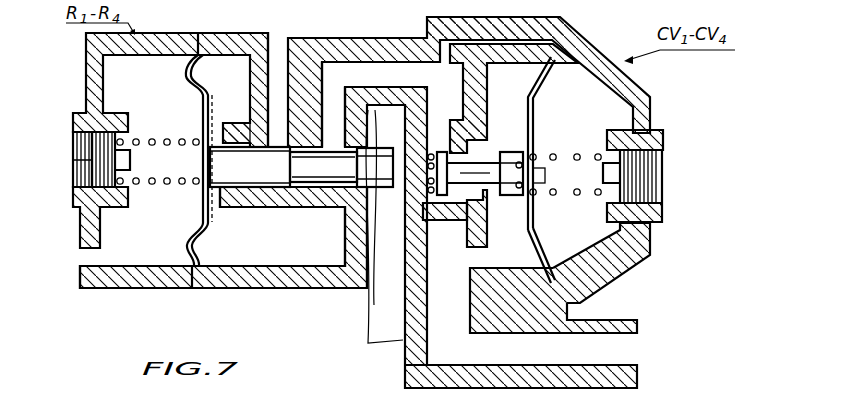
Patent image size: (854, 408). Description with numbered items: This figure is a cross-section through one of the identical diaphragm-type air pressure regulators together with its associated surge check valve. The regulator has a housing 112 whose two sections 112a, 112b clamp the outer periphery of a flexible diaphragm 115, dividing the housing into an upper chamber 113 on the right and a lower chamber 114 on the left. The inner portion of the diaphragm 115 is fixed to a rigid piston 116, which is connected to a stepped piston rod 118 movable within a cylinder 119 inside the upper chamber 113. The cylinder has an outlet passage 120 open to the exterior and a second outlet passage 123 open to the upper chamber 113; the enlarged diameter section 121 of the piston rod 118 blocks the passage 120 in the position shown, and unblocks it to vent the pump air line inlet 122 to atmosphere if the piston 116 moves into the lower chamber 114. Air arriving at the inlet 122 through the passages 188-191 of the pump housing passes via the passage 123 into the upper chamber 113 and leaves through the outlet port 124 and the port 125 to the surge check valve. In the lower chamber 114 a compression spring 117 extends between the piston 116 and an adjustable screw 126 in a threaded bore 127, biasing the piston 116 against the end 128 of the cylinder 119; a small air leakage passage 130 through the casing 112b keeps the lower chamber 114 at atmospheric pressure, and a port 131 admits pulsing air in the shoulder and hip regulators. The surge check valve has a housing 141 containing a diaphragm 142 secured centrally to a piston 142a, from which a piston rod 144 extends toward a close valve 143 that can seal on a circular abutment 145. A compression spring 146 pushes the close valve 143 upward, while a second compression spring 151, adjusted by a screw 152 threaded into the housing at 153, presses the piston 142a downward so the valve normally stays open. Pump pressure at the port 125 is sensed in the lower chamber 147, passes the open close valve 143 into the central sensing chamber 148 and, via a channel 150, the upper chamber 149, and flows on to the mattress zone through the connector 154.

The housing 112 is at (278, 300).
The housing section 112a is at (205, 36).
The housing section 112b is at (185, 45).
The upper chamber 113 is at (250, 260).
The lower chamber 114 is at (153, 260).
The flexible diaphragm 115 is at (197, 243).
The rigid piston 116 is at (189, 222).
The compression spring 117 is at (180, 122).
The piston rod 118 is at (270, 207).
The cylinder 119 is at (300, 207).
The outlet passage 120 is at (283, 44).
The enlarged diameter section 121 is at (301, 167).
The pump air line inlet 122 is at (377, 197).
The second outlet passage 123 is at (333, 207).
The outlet port 124 is at (330, 133).
The port 125 is at (435, 76).
The adjustable screw 126 is at (90, 175).
The threaded bore 127 is at (75, 150).
The end of cylinder 128 is at (240, 127).
The air leakage passage 130 is at (86, 60).
The port 131 is at (78, 254).
The housing 141 is at (623, 77).
The diaphragm 142 is at (532, 98).
The piston 142a is at (537, 212).
The close valve 143 is at (440, 148).
The piston rod 144 is at (490, 210).
The circular abutment 145 is at (463, 133).
The compression spring 146 is at (437, 152).
The lower chamber 147 is at (442, 220).
The central sensing chamber 148 is at (500, 265).
The upper chamber 149 is at (605, 258).
The channel 150 is at (563, 33).
The second compression spring 151 is at (553, 150).
The screw 152 is at (677, 190).
The thread 153 is at (643, 147).
The connector 154 is at (627, 352).
The passages 188-191 is at (375, 342).